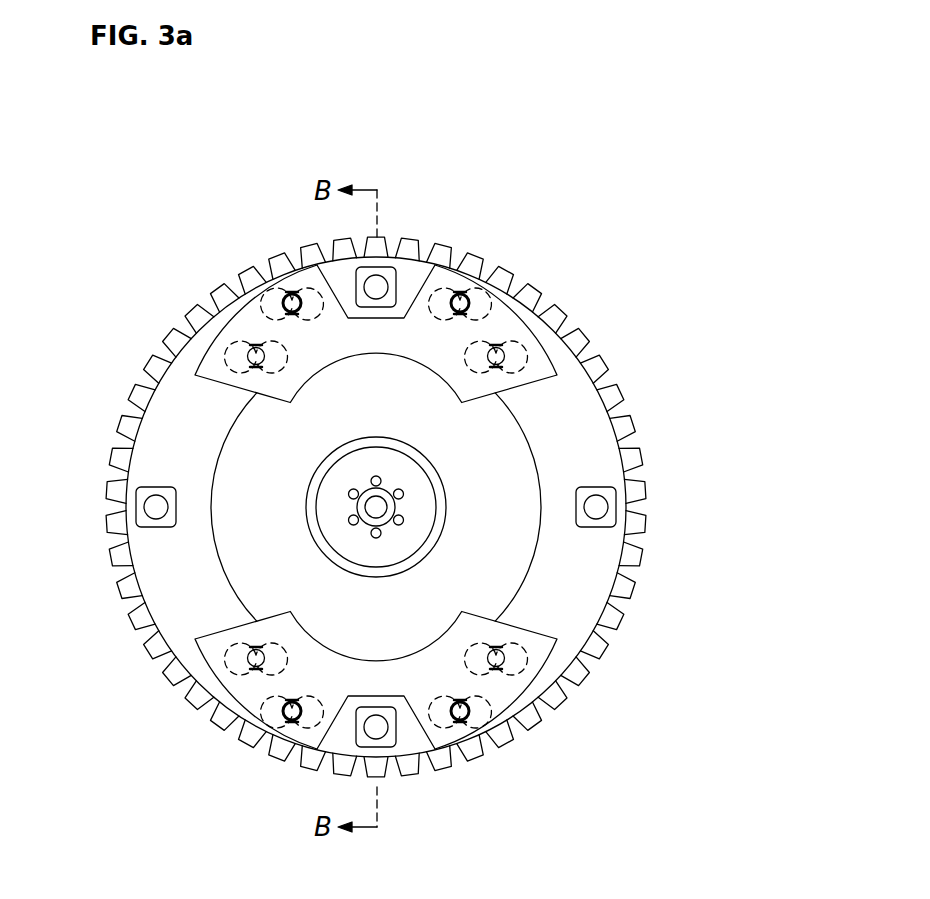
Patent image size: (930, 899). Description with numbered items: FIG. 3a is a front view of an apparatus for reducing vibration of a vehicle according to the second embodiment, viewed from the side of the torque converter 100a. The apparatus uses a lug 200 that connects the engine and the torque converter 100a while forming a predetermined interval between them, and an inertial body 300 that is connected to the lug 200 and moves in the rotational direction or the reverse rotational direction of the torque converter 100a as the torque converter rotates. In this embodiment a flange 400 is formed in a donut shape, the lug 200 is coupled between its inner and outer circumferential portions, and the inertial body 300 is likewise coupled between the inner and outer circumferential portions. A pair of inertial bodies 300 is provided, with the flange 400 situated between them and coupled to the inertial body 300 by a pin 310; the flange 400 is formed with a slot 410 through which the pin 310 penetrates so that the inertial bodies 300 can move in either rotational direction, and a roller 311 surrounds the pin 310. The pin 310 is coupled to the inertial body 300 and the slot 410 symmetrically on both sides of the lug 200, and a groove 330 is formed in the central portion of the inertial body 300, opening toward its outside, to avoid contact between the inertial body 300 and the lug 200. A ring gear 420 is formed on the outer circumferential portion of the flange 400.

The torque converter 100a is at (250, 467).
The lug 200 is at (377, 282).
The inertial body 300 is at (237, 335).
The pin 310 is at (497, 356).
The roller 311 is at (267, 307).
The groove 330 is at (420, 290).
The flange 400 is at (414, 495).
The slot 410 is at (240, 279).
The ring gear 420 is at (402, 495).